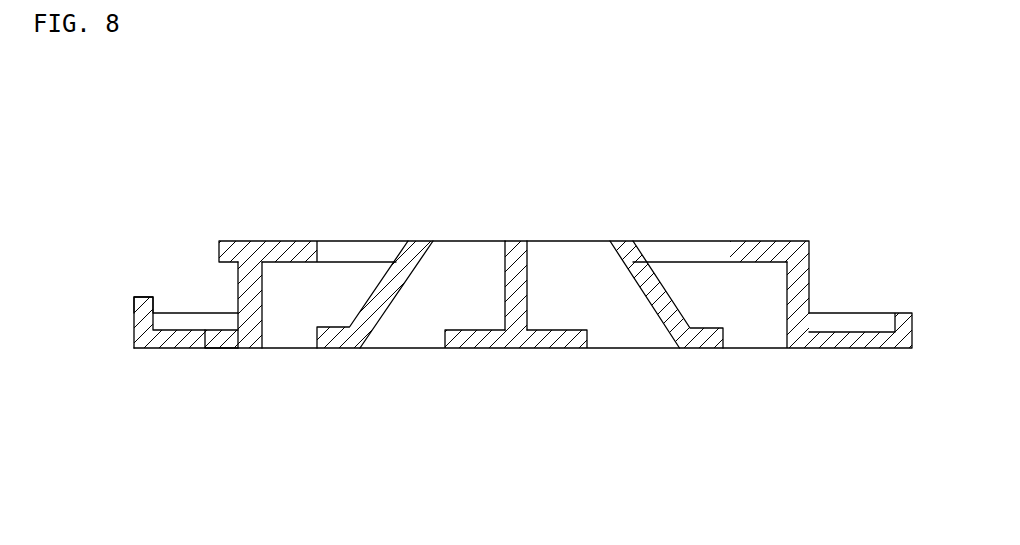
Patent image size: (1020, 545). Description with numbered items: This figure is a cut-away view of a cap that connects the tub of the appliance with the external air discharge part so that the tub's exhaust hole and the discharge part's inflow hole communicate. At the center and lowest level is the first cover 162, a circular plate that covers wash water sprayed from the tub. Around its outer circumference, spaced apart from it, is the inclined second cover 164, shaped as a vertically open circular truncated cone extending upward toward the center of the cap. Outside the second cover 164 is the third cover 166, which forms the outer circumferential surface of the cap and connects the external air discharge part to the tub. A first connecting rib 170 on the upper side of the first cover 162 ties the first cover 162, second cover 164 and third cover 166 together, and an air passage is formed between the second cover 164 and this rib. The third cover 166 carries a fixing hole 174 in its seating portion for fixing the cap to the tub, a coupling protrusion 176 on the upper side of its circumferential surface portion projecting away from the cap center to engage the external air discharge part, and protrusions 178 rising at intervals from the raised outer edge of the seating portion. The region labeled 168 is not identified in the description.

The first cover 162 is at (568, 342).
The second cover 164 is at (387, 287).
The third cover 166 is at (257, 318).
The lower flange plate 168 is at (180, 346).
The first connecting rib 170 is at (514, 252).
The fixing hole 174 is at (213, 342).
The coupling protrusion 176 is at (237, 255).
The protrusions 178 is at (142, 297).